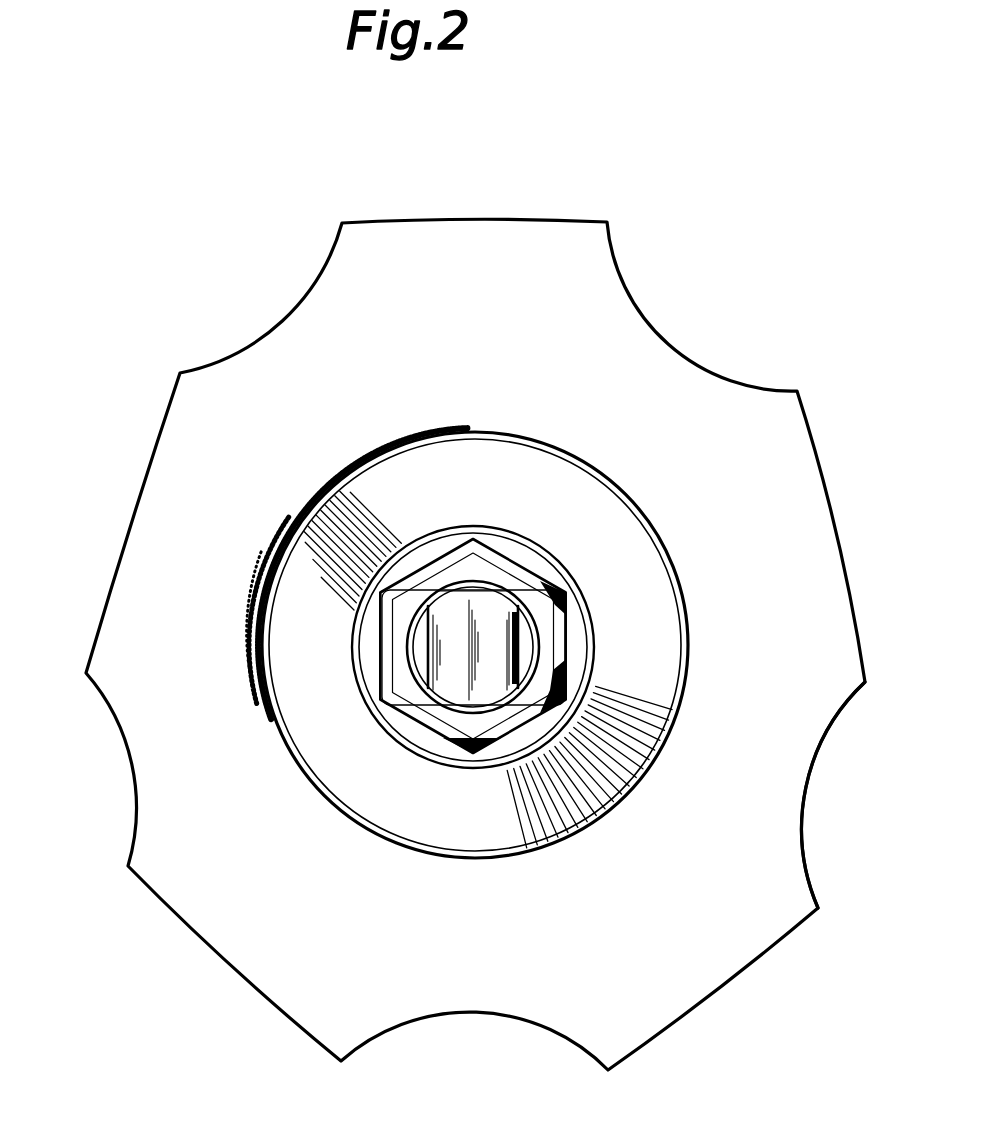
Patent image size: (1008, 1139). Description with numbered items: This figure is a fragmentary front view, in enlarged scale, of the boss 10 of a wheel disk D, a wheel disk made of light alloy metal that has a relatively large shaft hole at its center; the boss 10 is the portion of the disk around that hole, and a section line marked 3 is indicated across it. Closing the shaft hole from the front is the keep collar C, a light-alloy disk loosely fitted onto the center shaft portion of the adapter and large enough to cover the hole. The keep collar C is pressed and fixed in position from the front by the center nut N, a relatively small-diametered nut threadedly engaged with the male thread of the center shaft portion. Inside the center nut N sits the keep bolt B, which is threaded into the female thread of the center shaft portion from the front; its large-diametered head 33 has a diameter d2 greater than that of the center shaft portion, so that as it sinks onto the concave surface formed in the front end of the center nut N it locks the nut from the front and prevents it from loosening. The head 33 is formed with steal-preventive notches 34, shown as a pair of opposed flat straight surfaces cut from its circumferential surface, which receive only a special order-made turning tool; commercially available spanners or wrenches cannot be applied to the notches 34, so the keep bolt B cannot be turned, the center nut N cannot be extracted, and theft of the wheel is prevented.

The boss 10 is at (650, 357).
The head 33 is at (493, 685).
The steal-preventive notches 34 is at (427, 618).
The keep bolt B is at (504, 577).
The center nut N is at (422, 736).
The keep collar C is at (663, 759).
The wheel disk D is at (815, 805).
The diameter of the keep bolt head d2 is at (453, 707).
The section line 3- 3 is at (473, 187).